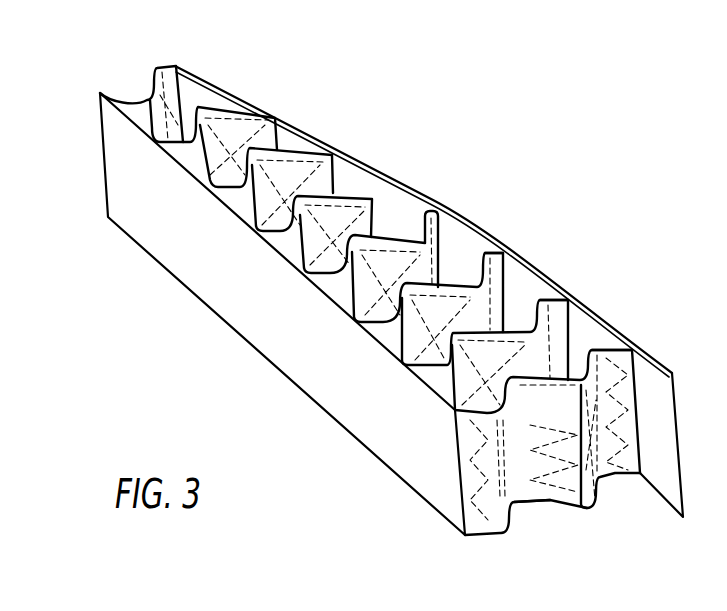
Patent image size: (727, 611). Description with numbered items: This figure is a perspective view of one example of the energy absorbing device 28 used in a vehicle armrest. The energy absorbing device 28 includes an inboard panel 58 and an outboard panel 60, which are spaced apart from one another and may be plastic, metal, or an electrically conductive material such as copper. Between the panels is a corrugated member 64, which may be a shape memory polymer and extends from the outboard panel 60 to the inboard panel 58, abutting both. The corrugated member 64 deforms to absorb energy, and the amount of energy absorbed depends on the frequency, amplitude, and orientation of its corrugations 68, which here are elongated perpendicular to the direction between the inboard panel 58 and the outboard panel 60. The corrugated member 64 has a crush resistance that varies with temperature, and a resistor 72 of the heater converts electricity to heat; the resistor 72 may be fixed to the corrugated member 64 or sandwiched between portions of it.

The energy absorbing device 28 is at (105, 60).
The inboard panel 58 is at (222, 264).
The outboard panel 60 is at (644, 377).
The corrugated member 64 is at (598, 346).
The corrugations 68 is at (374, 255).
The resistor 72 is at (551, 493).